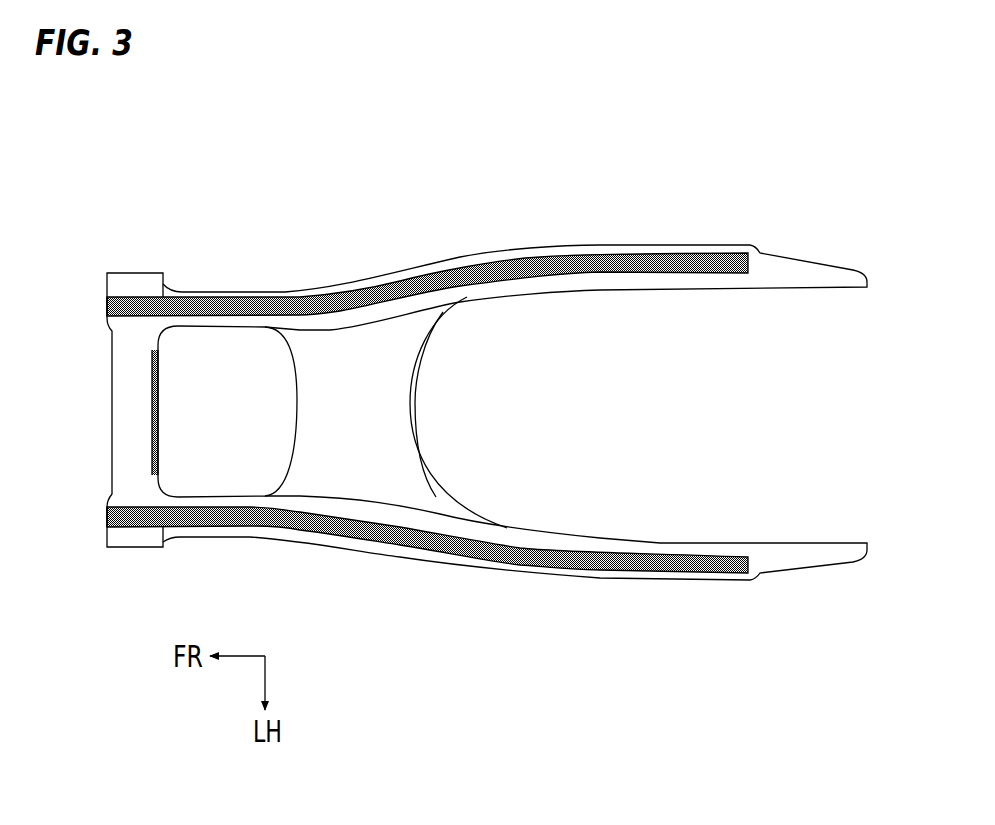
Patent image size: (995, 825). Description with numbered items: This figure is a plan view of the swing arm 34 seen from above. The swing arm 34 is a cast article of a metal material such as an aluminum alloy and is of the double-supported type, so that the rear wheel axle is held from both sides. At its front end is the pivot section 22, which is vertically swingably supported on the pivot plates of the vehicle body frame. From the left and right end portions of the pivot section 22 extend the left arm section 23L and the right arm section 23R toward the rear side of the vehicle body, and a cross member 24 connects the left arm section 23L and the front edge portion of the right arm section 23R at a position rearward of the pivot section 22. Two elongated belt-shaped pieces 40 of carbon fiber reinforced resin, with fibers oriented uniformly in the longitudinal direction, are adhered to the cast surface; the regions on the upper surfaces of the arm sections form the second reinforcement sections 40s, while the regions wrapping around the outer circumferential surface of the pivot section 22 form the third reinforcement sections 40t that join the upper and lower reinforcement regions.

The pivot section 22 is at (118, 407).
The right arm section 23R is at (358, 275).
The left arm section 23L is at (362, 535).
The cross member 24 is at (387, 405).
The swing arm 34 is at (620, 172).
The belt-shaped piece 40 is at (713, 252).
The second reinforcement section 40s is at (547, 255).
The third reinforcement section 40t is at (133, 300).